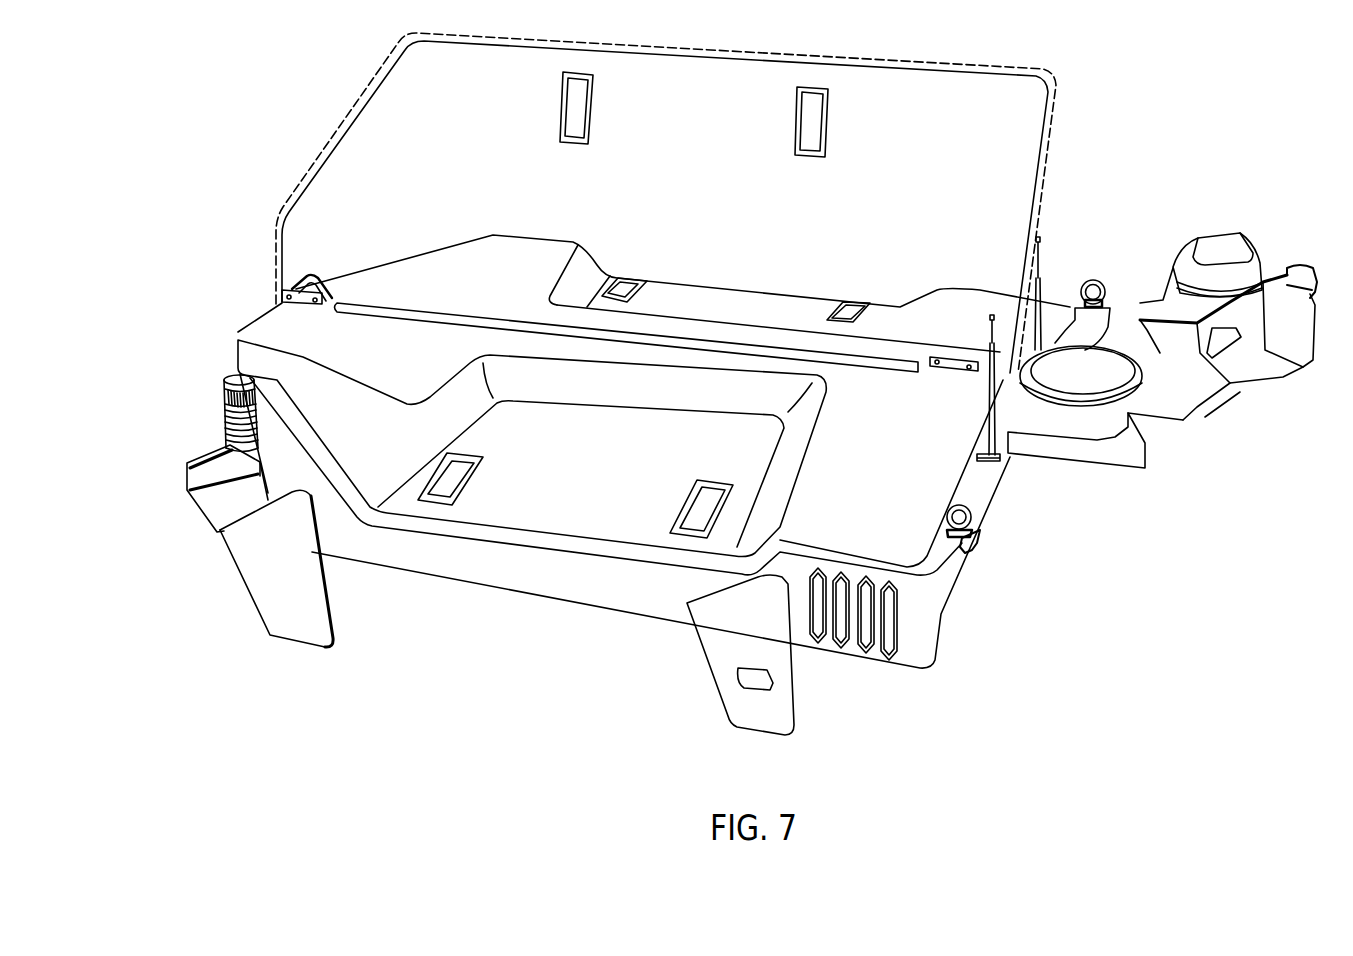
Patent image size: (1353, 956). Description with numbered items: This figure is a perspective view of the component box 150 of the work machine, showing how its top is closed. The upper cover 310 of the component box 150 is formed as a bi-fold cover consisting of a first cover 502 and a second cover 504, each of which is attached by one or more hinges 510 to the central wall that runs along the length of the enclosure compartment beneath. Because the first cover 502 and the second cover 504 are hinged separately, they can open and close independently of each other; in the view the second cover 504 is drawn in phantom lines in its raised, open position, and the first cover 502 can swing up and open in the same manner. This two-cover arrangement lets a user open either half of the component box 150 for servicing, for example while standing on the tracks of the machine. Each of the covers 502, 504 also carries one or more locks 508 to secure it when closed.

The component box 150 is at (450, 550).
The upper cover 310 is at (573, 515).
The first cover 502 is at (940, 463).
The second cover 504 is at (1049, 165).
The lock 508 is at (813, 88).
The hinge 510 is at (297, 282).